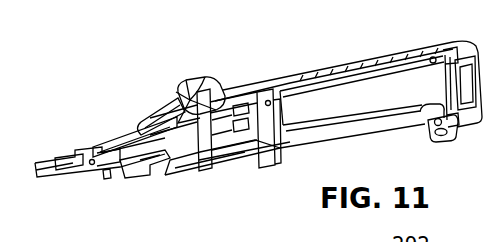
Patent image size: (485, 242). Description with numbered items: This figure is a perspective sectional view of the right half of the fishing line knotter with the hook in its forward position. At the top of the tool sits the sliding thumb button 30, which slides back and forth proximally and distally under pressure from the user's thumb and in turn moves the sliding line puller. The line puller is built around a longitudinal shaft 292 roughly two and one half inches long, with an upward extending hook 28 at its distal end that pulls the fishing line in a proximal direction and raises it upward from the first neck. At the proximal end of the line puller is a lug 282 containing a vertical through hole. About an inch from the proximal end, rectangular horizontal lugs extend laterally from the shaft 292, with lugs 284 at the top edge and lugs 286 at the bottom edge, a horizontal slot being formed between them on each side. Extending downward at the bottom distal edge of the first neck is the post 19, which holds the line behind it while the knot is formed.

The post 19 is at (108, 178).
The hook 28 is at (73, 155).
The sliding thumb button 30 is at (195, 76).
The lug 282 is at (197, 140).
The lugs 284 is at (167, 157).
The lugs 286 is at (141, 130).
The longitudinal shaft 292 is at (110, 130).